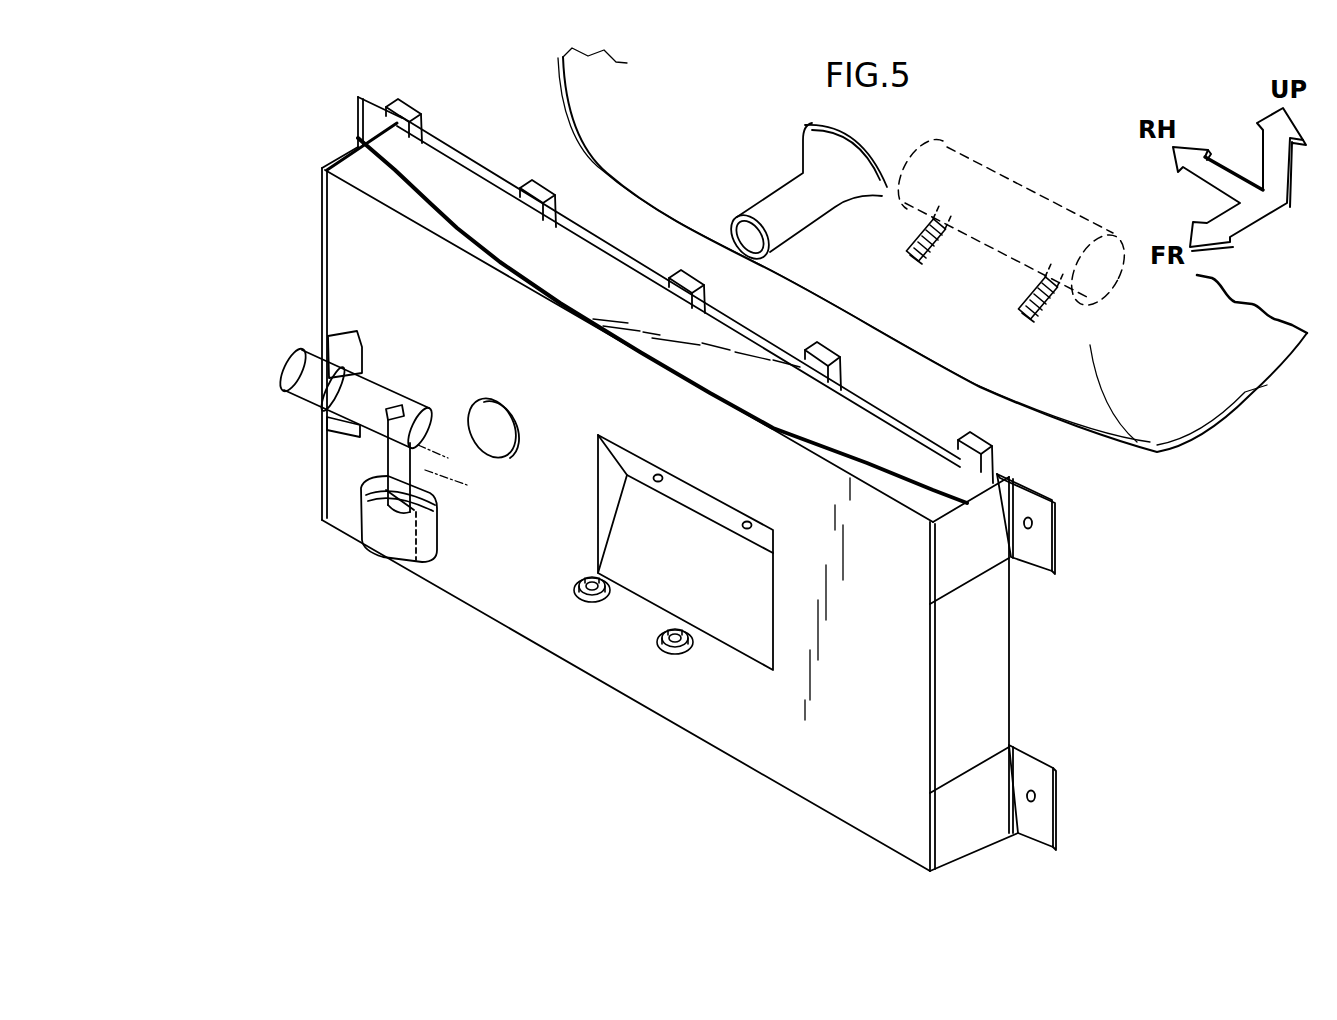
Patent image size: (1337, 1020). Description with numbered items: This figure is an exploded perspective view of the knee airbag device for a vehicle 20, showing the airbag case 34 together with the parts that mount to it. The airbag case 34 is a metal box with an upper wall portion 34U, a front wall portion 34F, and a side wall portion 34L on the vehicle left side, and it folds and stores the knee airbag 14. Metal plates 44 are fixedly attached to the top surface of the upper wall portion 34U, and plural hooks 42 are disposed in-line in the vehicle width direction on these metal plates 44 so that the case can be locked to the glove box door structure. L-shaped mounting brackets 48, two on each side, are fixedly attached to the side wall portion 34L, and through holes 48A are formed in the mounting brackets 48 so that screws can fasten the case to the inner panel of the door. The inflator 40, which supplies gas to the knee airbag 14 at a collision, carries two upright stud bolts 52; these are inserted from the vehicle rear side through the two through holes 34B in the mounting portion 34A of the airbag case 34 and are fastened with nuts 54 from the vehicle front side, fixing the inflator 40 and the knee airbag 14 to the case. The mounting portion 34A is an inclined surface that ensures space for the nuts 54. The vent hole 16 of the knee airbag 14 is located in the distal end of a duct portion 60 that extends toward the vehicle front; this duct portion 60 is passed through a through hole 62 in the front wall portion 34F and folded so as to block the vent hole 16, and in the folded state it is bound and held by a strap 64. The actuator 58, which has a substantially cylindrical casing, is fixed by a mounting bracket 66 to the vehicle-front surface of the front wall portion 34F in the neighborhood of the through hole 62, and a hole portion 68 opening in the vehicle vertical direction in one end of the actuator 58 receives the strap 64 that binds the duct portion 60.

The knee airbag 14 is at (1222, 432).
The vent hole 16 is at (722, 240).
The knee airbag device for a vehicle 20 is at (243, 140).
The airbag case 34 is at (692, 736).
The mounting portion 34A is at (711, 508).
The through holes 34B is at (658, 483).
The front wall portion 34F is at (448, 568).
The side wall portion 34L is at (972, 692).
The upper wall portion 34U is at (350, 168).
The inflator 40 is at (1043, 192).
The hooks 42 is at (413, 102).
The metal plates 44 is at (450, 226).
The mounting brackets 48 is at (353, 103).
The through holes 48A is at (1026, 530).
The stud bolts 52 is at (1024, 314).
The nuts 54 is at (662, 652).
The actuator 58 is at (287, 365).
The duct portion 60 is at (777, 205).
The through hole 62 is at (503, 446).
The strap 64 is at (388, 456).
The mounting bracket 66 is at (349, 334).
The hole portion 68 is at (406, 408).